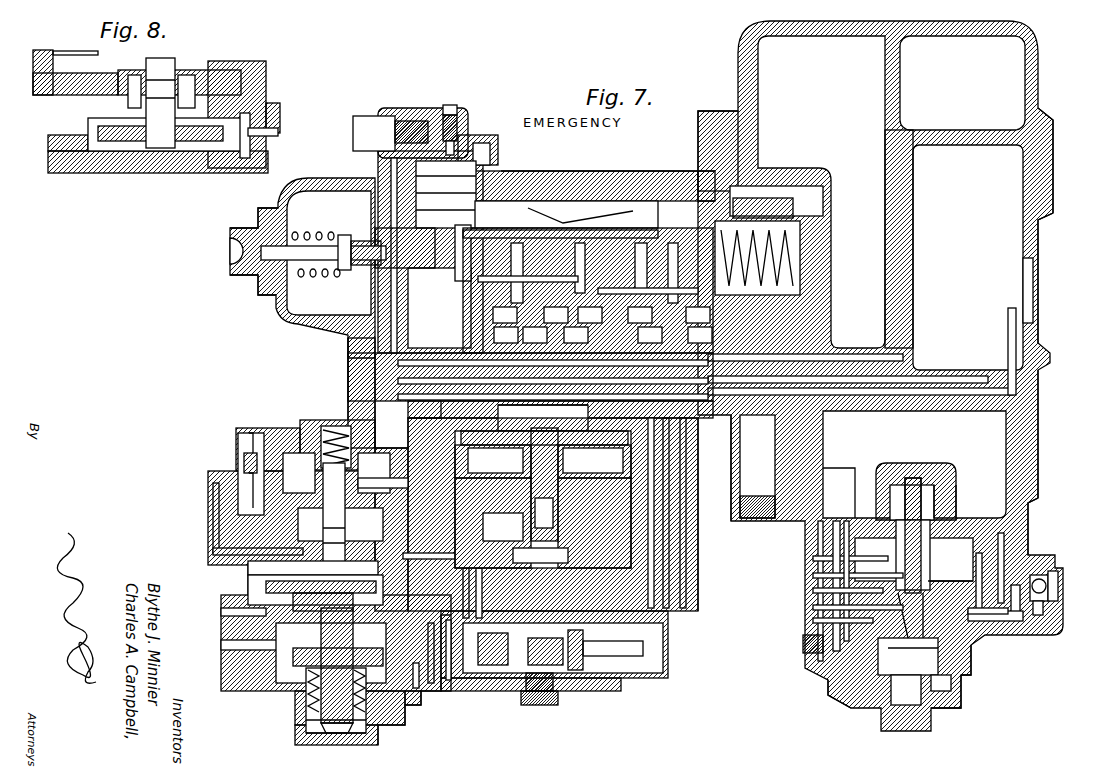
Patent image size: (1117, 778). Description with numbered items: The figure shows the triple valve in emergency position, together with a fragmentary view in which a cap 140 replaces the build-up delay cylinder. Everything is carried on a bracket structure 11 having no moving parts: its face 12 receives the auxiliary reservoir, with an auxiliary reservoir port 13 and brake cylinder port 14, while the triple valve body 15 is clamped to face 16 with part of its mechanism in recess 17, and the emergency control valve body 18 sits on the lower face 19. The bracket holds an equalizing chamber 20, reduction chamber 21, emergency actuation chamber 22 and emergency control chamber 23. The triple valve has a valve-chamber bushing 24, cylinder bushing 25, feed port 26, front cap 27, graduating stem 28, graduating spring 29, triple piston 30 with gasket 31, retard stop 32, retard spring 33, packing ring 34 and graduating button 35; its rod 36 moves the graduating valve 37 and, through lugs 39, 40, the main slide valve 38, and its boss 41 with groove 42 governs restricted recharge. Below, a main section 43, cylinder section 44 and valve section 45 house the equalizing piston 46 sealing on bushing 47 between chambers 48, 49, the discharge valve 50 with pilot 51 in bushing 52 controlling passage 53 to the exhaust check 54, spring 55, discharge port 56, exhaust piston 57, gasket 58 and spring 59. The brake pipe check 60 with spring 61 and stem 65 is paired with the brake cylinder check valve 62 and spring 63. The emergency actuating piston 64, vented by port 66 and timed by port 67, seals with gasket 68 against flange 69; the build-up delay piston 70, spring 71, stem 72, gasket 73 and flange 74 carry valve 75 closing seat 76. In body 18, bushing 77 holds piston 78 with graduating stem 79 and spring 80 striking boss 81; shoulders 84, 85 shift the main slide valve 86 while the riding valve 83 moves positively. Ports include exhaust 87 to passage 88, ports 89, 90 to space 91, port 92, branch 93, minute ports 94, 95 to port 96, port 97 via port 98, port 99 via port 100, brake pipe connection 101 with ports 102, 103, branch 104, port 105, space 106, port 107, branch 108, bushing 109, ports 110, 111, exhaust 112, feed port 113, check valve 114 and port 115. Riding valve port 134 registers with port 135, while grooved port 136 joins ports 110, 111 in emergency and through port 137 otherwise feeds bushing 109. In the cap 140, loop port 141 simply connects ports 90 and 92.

In FIG. 7, the bracket structure 11 is at (1030, 98).
In FIG. 7, the face 12 is at (1045, 170).
In FIG. 7, the auxiliary reservoir port 13 is at (1031, 215).
In FIG. 7, the brake cylinder port 14 is at (1032, 352).
In FIG. 7, the triple valve body 15 is at (590, 165).
In FIG. 7, the face 16 is at (690, 118).
In FIG. 7, the recess 17 is at (776, 198).
In FIG. 7, the emergency control valve body 18 is at (965, 650).
In FIG. 7, the lower face 19 is at (1021, 500).
In FIG. 7, the equalizing chamber 20 is at (968, 257).
In FIG. 7, the reduction chamber 21 is at (962, 83).
In FIG. 7, the emergency actuation chamber 22 is at (821, 192).
In FIG. 7, the emergency control chamber 23 is at (914, 464).
In FIG. 7, the valve-chamber bushing 24 is at (540, 165).
In FIG. 7, the cylinder bushing 25 is at (404, 110).
In FIG. 7, the feed port 26 is at (450, 118).
In FIG. 7, the front cap 27 is at (270, 305).
In FIG. 7, the graduating stem 28 is at (225, 245).
In FIG. 7, the graduating spring 29 is at (310, 224).
In FIG. 7, the triple piston 30 is at (410, 172).
In FIG. 7, the piston gasket 31 is at (370, 152).
In FIG. 7, the piston retard stop 32 is at (690, 175).
In FIG. 7, the retard spring 33 is at (793, 252).
In FIG. 7, the packing ring 34 is at (410, 156).
In FIG. 7, the graduating button 35 is at (355, 260).
In FIG. 7, the piston rod 36 is at (427, 242).
In FIG. 7, the graduating valve 37 is at (532, 206).
In FIG. 7, the main triple slide valve 38 is at (439, 308).
In FIG. 7, the lug 39 is at (447, 224).
In FIG. 7, the lug 40 is at (612, 225).
In FIG. 7, the annular boss 41 is at (410, 202).
In FIG. 7, the feed groove 42 is at (410, 186).
In FIG. 7, the main section 43 is at (661, 557).
In FIG. 7, the emergency build-up delay cylinder section 44 is at (440, 662).
In FIG. 7, the emergency build-up delay valve section 45 is at (400, 718).
In FIG. 7, the equalizing piston 46 is at (544, 436).
In FIG. 7, the cylinder bushing 47 is at (493, 461).
In FIG. 7, the upper chamber 48 is at (543, 410).
In FIG. 7, the lower chamber 49 is at (594, 461).
In FIG. 7, the equalizing discharge valve 50 is at (544, 484).
In FIG. 7, the pilot 51 is at (544, 511).
In FIG. 7, the bushing 52 is at (543, 499).
In FIG. 7, the passage 53 is at (540, 559).
In FIG. 7, the quick service exhaust check 54 is at (490, 668).
In FIG. 7, the spring 55 is at (485, 658).
In FIG. 7, the quick service discharge port 56 is at (530, 698).
In FIG. 7, the quick service exhaust piston 57 is at (605, 650).
In FIG. 7, the sealing gasket 58 is at (568, 665).
In FIG. 7, the spring 59 is at (535, 660).
In FIG. 7, the brake pipe check 60 is at (336, 473).
In FIG. 7, the spring 61 is at (325, 420).
In FIG. 7, the brake cylinder check valve 62 is at (232, 460).
In FIG. 7, the spring 63 is at (232, 436).
In FIG. 7, the emergency actuating piston 64 is at (252, 580).
In FIG. 8, the stem 65 is at (160, 56).
In FIG. 7, the stem 65 is at (334, 522).
In FIG. 7, the atmospheric port 66 is at (255, 560).
In FIG. 8, the timing port 67 is at (112, 134).
In FIG. 7, the timing port 67 is at (323, 601).
In FIG. 8, the gasket 68 is at (118, 104).
In FIG. 7, the gasket 68 is at (392, 567).
In FIG. 7, the flange 69 is at (376, 535).
In FIG. 7, the emergency build-up delay piston 70 is at (230, 665).
In FIG. 7, the spring 71 is at (300, 690).
In FIG. 7, the stem 72 is at (338, 670).
In FIG. 7, the gasket 73 is at (218, 637).
In FIG. 7, the flange 74 is at (215, 603).
In FIG. 7, the valve portion 75 is at (320, 722).
In FIG. 7, the valve seat 76 is at (300, 714).
In FIG. 7, the cylinder bushing 77 is at (934, 535).
In FIG. 7, the emergency control piston 78 is at (876, 559).
In FIG. 7, the graduating stem 79 is at (948, 482).
In FIG. 7, the graduating spring 80 is at (930, 492).
In FIG. 7, the boss 81 is at (898, 465).
In FIG. 7, the riding slide valve 83 is at (955, 666).
In FIG. 7, the shoulder 84 is at (898, 630).
In FIG. 7, the shoulder 85 is at (950, 571).
In FIG. 7, the main slide valve 86 is at (870, 700).
In FIG. 7, the main exhaust port 87 is at (556, 315).
In FIG. 7, the passage 88 is at (535, 335).
In FIG. 7, the port 89 is at (588, 290).
In FIG. 8, the port 90 is at (258, 100).
In FIG. 7, the port 90 is at (506, 335).
In FIG. 7, the space 91 is at (342, 727).
In FIG. 8, the port 92 is at (262, 114).
In FIG. 7, the port 92 is at (678, 470).
In FIG. 8, the branch port 93 is at (40, 82).
In FIG. 7, the branch port 93 is at (198, 482).
In FIG. 7, the minute port 94 is at (590, 315).
In FIG. 7, the minute port 95 is at (640, 315).
In FIG. 7, the port 96 is at (675, 578).
In FIG. 7, the port 97 is at (428, 700).
In FIG. 7, the port 98 is at (892, 305).
In FIG. 7, the port 99 is at (458, 566).
In FIG. 7, the port 100 is at (700, 335).
In FIG. 7, the brake pipe connection 101 is at (742, 512).
In FIG. 7, the port 102 is at (732, 440).
In FIG. 7, the port 103 is at (825, 462).
In FIG. 7, the branch port 104 is at (367, 395).
In FIG. 7, the port 105 is at (383, 478).
In FIG. 7, the space 106 is at (362, 445).
In FIG. 7, the port 107 is at (910, 352).
In FIG. 7, the branch port 108 is at (1030, 421).
In FIG. 7, the bushing 109 is at (962, 636).
In FIG. 8, the port 110 is at (270, 126).
In FIG. 7, the port 110 is at (805, 599).
In FIG. 7, the port 111 is at (805, 567).
In FIG. 7, the exhaust port 112 is at (795, 632).
In FIG. 7, the feed port 113 is at (996, 540).
In FIG. 7, the check valve 114 is at (1042, 577).
In FIG. 7, the port 115 is at (805, 551).
In FIG. 7, the through port 134 is at (926, 645).
In FIG. 7, the port 135 is at (838, 685).
In FIG. 7, the grooved port 136 is at (805, 612).
In FIG. 7, the through port 137 is at (805, 582).
In FIG. 8, the cap 140 is at (172, 160).
In FIG. 8, the loop port 141 is at (240, 150).